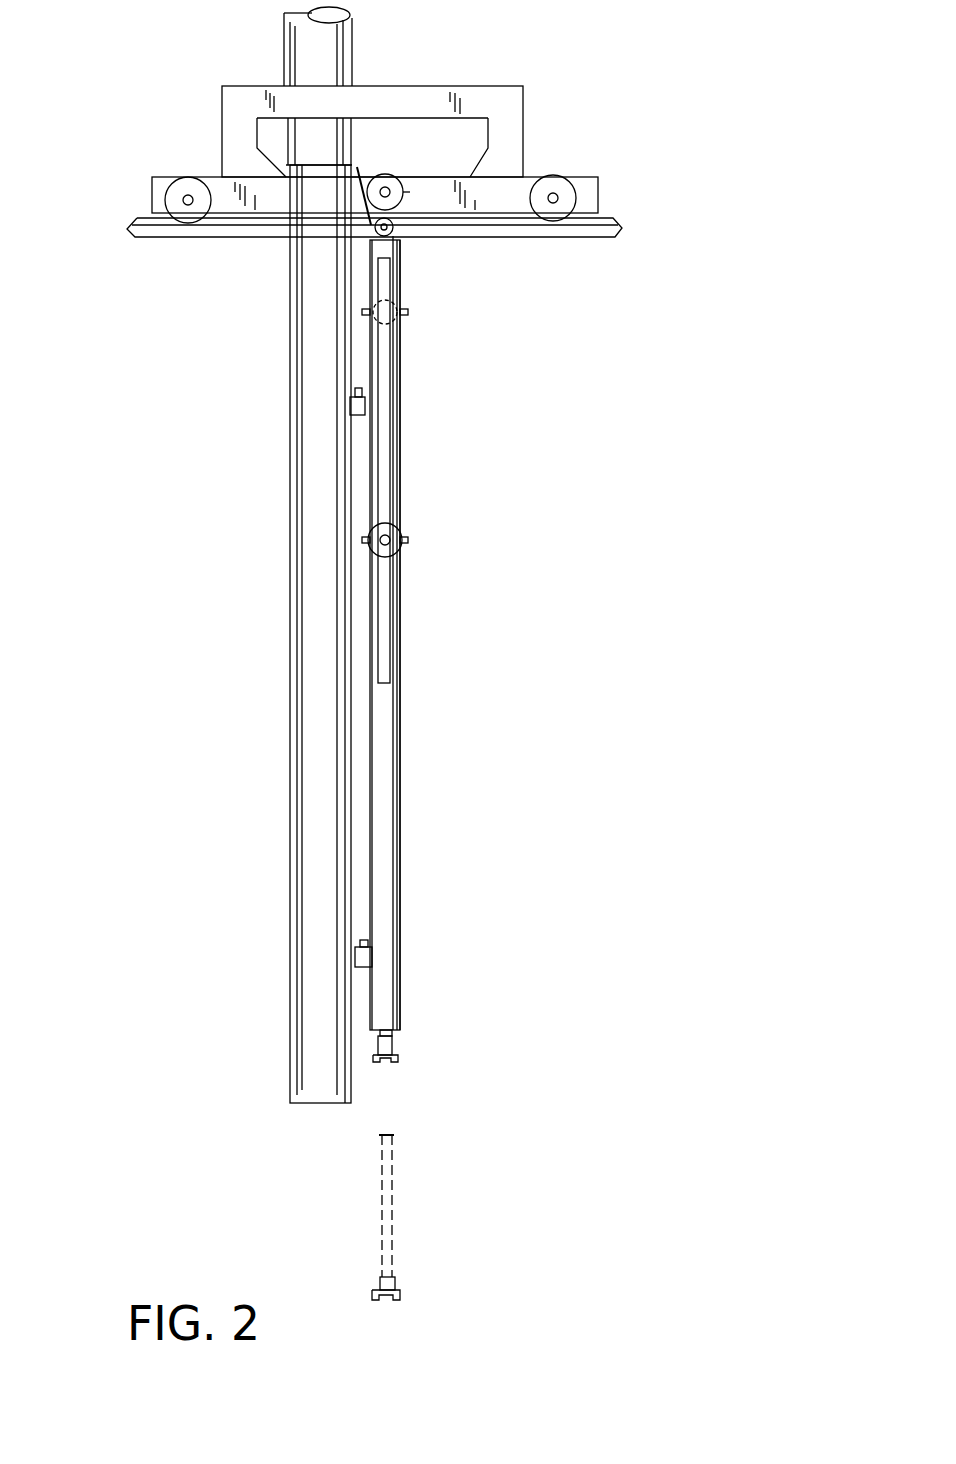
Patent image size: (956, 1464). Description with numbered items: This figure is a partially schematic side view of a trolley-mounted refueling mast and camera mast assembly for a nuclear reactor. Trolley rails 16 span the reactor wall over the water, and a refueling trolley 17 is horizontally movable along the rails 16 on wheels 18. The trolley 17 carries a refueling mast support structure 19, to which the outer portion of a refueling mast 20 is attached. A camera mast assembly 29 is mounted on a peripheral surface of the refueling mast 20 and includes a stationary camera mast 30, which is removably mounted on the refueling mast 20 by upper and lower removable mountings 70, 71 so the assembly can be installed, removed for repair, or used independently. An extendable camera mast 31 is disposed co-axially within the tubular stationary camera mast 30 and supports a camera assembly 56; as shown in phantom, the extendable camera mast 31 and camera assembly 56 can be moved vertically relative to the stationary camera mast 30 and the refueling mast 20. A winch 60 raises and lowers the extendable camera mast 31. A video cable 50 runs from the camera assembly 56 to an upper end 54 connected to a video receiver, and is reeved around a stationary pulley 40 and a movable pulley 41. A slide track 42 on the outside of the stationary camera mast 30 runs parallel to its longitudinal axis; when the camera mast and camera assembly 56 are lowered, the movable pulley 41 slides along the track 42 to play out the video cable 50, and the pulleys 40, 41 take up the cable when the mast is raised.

The trolley rails 16 is at (162, 233).
The refueling trolley 17 is at (583, 183).
The wheels 18 is at (182, 183).
The refueling mast support structure 19 is at (468, 98).
The refueling mast 20 is at (315, 862).
The camera mast assembly 29 is at (435, 712).
The stationary camera mast 30 is at (385, 818).
The extendable camera mast 31 is at (397, 1033).
The stationary pulley 40 is at (393, 198).
The movable pulley 41 is at (403, 320).
The slide track 42 is at (385, 437).
The video cable 50 is at (405, 392).
The upper end 54 is at (357, 167).
The camera assembly 56 is at (395, 1045).
The winch 60 is at (388, 232).
The upper removable mounting 70 is at (365, 408).
The lower removable mounting 71 is at (355, 960).